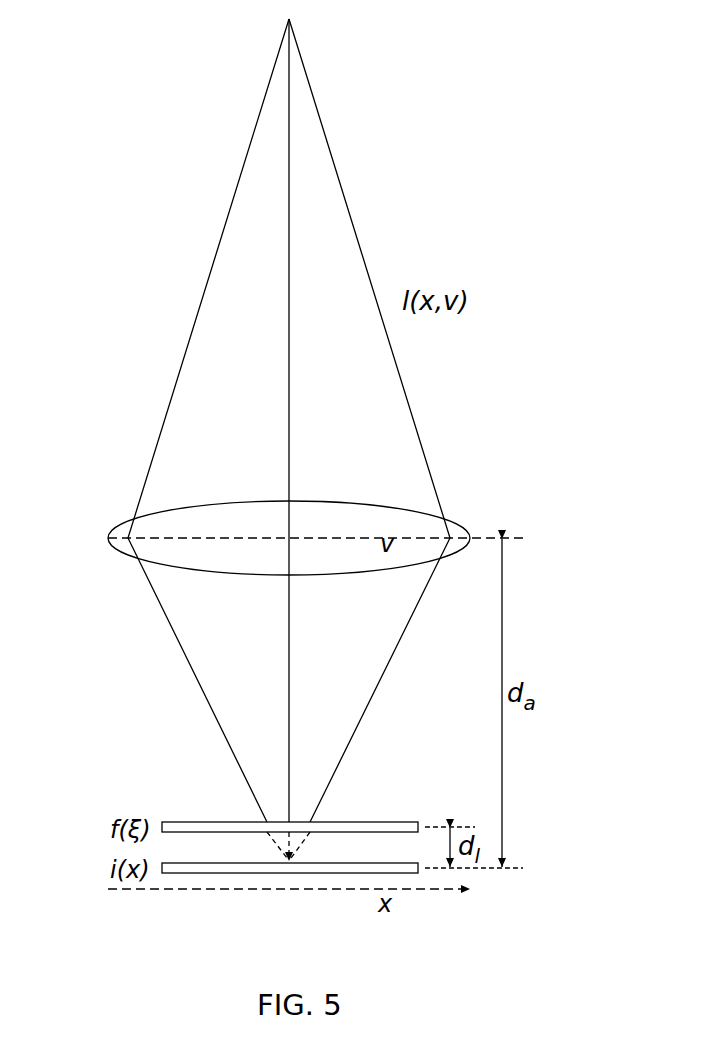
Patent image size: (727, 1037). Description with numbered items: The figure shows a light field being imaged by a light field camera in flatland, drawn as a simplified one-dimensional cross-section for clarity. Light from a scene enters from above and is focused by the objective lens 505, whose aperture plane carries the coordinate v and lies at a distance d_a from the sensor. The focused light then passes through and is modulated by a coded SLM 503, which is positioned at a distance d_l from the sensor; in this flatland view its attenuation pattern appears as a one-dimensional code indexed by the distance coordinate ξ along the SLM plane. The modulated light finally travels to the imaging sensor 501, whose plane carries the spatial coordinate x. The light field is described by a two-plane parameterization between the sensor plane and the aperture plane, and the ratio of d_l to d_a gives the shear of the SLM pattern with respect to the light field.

The imaging sensor 501 is at (176, 863).
The SLM 503 is at (228, 822).
The objective lens 505 is at (108, 538).